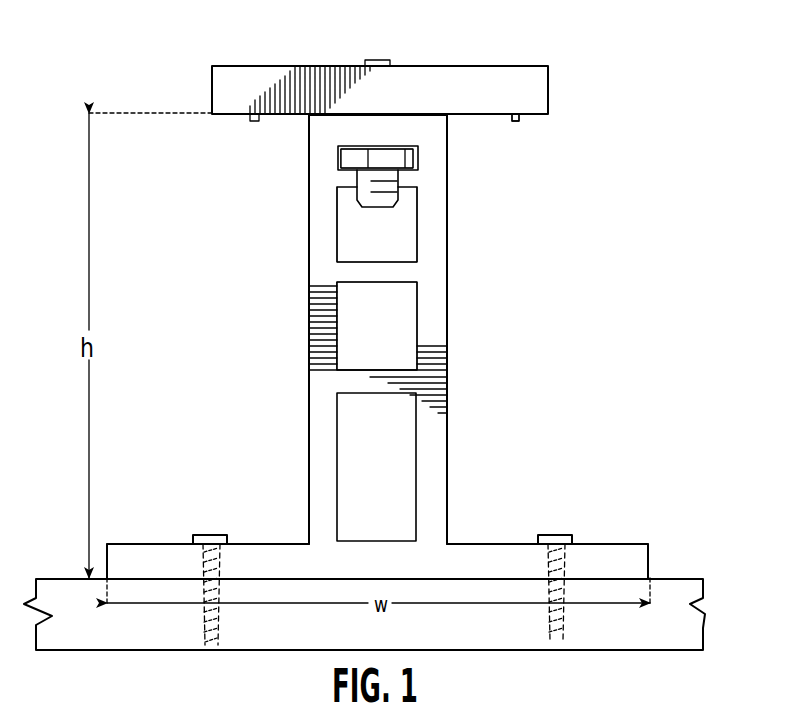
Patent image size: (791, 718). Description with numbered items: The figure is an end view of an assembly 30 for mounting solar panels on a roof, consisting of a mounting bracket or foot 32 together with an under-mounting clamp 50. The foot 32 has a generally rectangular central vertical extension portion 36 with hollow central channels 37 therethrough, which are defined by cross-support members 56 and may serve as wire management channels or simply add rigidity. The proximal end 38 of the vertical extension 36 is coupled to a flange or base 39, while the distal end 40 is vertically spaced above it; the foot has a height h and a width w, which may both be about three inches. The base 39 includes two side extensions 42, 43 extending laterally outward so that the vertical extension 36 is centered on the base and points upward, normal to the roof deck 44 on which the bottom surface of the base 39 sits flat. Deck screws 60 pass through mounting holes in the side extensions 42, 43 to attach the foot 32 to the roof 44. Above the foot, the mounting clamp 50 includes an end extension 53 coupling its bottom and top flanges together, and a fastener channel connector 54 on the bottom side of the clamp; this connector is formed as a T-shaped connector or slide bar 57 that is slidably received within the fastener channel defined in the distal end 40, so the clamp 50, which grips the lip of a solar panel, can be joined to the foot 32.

The assembly 30 is at (697, 73).
The mounting bracket 32 is at (590, 340).
The central vertical extension portion 36 is at (297, 312).
The hollow central channel 37 is at (395, 325).
The proximal end 38 is at (283, 503).
The base 39 is at (663, 561).
The distal end 40 is at (290, 143).
The side extension 42 is at (130, 544).
The side extension 43 is at (646, 544).
The roof deck 44 is at (690, 607).
The mounting clamp 50 is at (560, 115).
The end extension 53 is at (545, 93).
The fastener channel connector 54 is at (423, 170).
The cross-support member 56 is at (515, 121).
The T-shaped connector 57 is at (338, 160).
The deck screw 60 is at (556, 537).